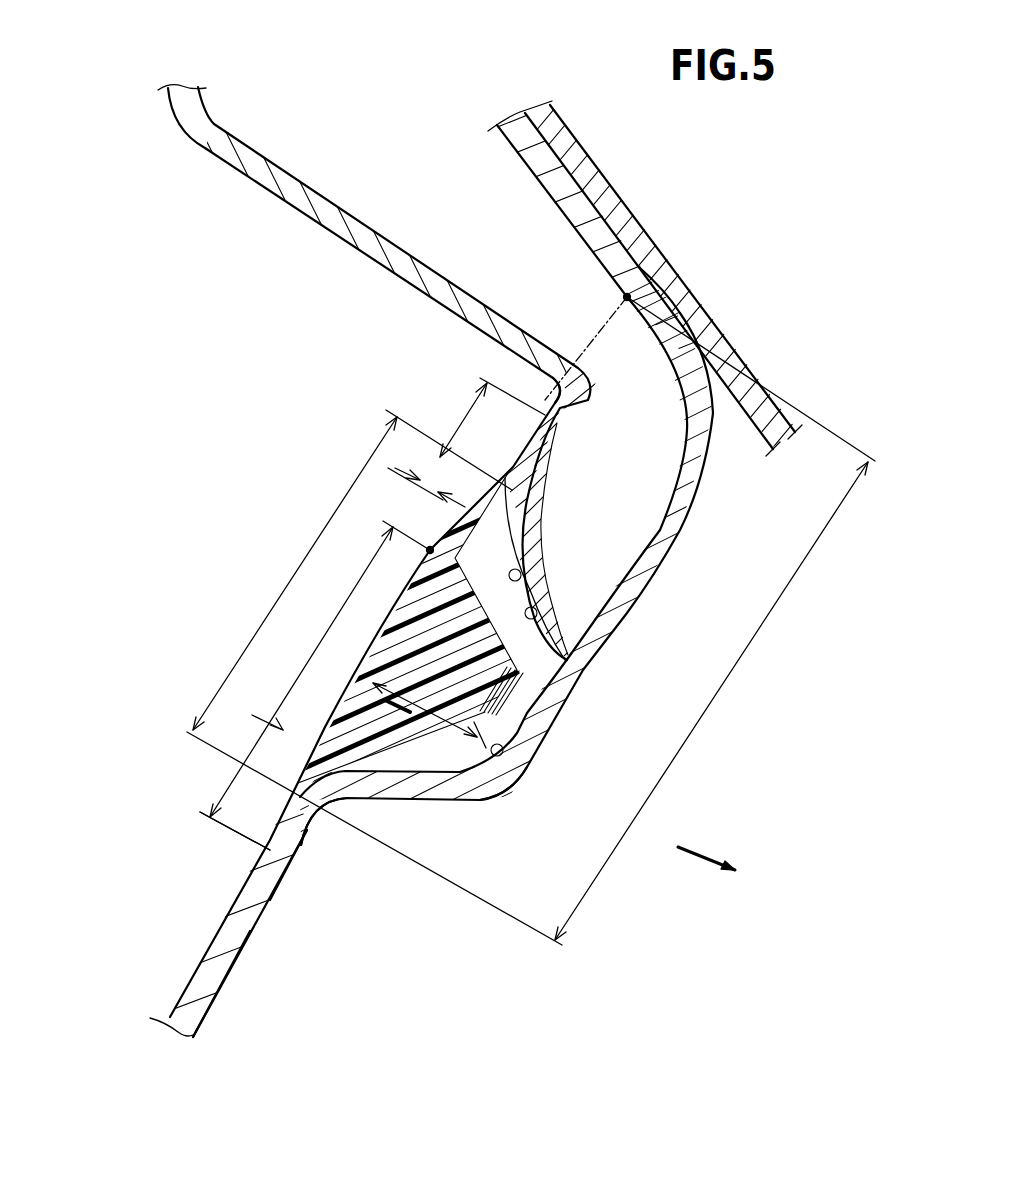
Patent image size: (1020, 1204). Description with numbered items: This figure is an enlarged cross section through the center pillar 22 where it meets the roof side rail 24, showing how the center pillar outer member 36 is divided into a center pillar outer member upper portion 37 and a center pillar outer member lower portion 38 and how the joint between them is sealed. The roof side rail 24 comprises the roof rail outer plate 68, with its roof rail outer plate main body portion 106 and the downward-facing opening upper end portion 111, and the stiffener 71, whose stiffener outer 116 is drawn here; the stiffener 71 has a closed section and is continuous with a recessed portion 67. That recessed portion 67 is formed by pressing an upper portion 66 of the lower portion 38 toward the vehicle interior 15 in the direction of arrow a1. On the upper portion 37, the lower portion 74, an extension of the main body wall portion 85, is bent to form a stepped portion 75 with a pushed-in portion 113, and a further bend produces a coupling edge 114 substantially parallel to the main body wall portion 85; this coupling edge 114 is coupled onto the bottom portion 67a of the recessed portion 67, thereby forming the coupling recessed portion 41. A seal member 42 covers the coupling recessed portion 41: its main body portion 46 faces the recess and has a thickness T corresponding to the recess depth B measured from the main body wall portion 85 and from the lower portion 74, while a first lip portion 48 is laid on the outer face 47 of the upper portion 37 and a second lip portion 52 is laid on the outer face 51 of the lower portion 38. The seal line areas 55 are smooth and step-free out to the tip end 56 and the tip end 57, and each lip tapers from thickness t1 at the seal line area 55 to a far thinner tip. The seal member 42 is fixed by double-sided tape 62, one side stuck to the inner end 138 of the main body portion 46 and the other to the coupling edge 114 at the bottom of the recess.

The vehicle interior 15 is at (735, 988).
The center pillar 22 is at (100, 938).
The roof side rail 24 is at (215, 250).
The center pillar outer member 36 is at (223, 990).
The center pillar outer member lower portion 38 is at (221, 984).
The center pillar outer member upper portion 37 is at (530, 447).
The coupling recessed portion 41 is at (312, 553).
The seal member 42 is at (330, 628).
The main body portion 46 is at (372, 563).
The outer face 47 is at (532, 448).
The first lip portion 48 is at (462, 418).
The outer face 51 is at (180, 997).
The second lip portion 52 is at (233, 775).
The seal line areas 55 is at (343, 637).
The tip end 56 is at (545, 428).
The tip end 57 is at (297, 850).
The double-sided tape 62 is at (523, 710).
The upper portion 66 is at (312, 830).
The recessed portion 67 is at (730, 672).
The bottom portion 67a is at (490, 762).
The roof rail outer plate 68 is at (178, 110).
The stiffener 71 is at (548, 100).
The lower portion 74 is at (540, 432).
The stepped portion 75 is at (521, 578).
The main body wall portion 85 is at (195, 972).
The roof rail outer plate main body portion 106 is at (168, 90).
The opening upper end portion 111 is at (332, 228).
The pushed-in portion 113 is at (537, 616).
The coupling edge 114 is at (515, 697).
The stiffener outer 116 is at (660, 246).
The inner end 138 is at (429, 718).
The depth B is at (409, 690).
The thickness T is at (340, 770).
The thickness t1 is at (440, 487).
The direction of arrow a1 is at (720, 869).